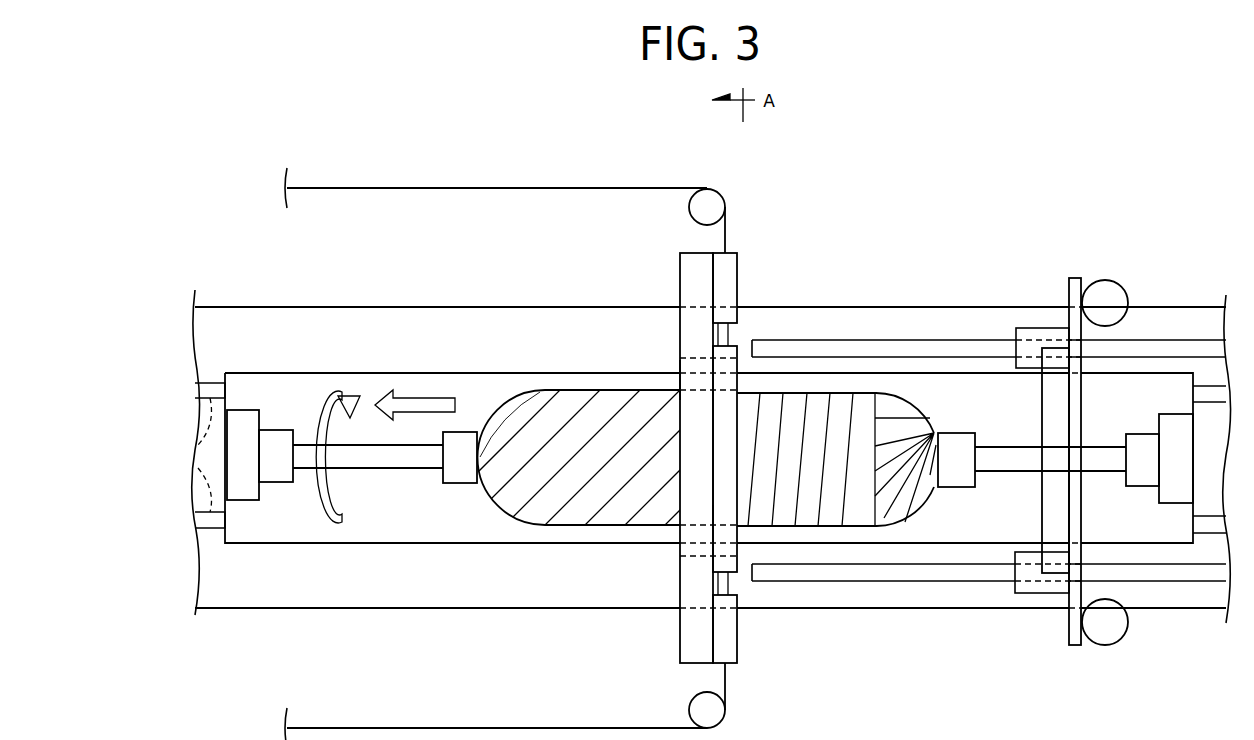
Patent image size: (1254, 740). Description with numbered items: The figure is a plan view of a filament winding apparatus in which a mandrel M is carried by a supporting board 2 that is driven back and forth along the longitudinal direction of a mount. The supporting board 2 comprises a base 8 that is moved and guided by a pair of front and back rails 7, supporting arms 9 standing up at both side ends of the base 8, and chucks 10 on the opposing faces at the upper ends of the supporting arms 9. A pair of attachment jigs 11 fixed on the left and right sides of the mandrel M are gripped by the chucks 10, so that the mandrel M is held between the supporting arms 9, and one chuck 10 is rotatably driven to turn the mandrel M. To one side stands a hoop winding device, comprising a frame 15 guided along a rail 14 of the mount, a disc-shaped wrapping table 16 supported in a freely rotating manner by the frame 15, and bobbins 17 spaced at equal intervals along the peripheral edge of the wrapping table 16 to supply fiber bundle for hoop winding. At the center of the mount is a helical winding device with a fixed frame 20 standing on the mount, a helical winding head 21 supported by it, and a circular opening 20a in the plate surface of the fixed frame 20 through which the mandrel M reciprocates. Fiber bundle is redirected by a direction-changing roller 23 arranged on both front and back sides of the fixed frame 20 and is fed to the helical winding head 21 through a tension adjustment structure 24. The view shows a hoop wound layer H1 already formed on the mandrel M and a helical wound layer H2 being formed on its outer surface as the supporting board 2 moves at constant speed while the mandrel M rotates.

The supporting board 2 is at (350, 542).
The rails 7 is at (195, 460).
The base 8 is at (452, 544).
The supporting arms 9 is at (240, 408).
The chucks 10 is at (288, 428).
The attachment jigs 11 is at (388, 470).
The rail 14 is at (947, 340).
The frame 15 is at (1032, 414).
The wrapping table 16 is at (1075, 478).
The bobbins 17 is at (1127, 293).
The fixed frame 20 is at (680, 645).
The circular opening 20a is at (682, 380).
The helical winding head 21 is at (720, 513).
The direction-changing roller 23 is at (708, 190).
The tension adjustment structure 24 is at (740, 276).
The mandrel M is at (546, 390).
The hoop wound layer H1 is at (842, 393).
The helical wound layer H2 is at (595, 395).